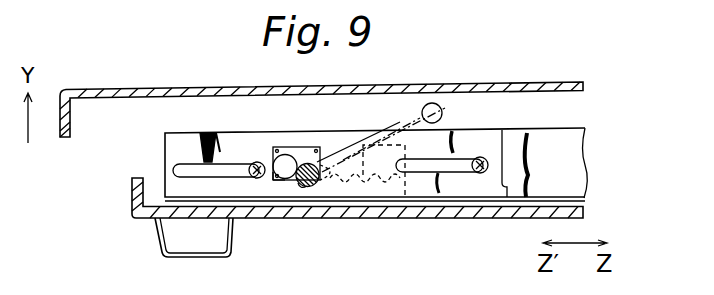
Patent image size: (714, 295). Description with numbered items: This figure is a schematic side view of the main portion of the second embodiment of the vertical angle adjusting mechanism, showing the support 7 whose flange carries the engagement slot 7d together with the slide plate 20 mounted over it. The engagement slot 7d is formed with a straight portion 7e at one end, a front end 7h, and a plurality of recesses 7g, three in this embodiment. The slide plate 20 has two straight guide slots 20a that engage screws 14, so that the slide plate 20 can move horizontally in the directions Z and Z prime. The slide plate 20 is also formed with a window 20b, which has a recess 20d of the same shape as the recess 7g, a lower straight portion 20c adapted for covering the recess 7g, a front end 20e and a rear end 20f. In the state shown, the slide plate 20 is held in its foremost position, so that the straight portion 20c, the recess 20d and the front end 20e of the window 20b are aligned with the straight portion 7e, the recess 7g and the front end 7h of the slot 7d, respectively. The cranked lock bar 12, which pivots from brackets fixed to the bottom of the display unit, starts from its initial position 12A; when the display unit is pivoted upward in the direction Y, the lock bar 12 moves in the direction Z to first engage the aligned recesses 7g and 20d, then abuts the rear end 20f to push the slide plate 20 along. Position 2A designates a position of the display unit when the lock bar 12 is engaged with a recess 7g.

The position of the display unit 2A is at (118, 89).
The support 7 is at (585, 168).
The front end of the slot 7h is at (194, 91).
The straight portion 7e is at (282, 180).
The recess 7g is at (303, 184).
The engagement slot 7d is at (411, 200).
The lock bar 12 is at (317, 182).
The initial position of the lock bar 12A is at (292, 146).
The screw 14 is at (252, 162).
The slide plate 20 is at (509, 187).
The straight guide slot 20a is at (182, 167).
The window 20b is at (305, 146).
The lower straight portion 20c is at (260, 231).
The recess 20d is at (328, 236).
The front end of the window 20e is at (273, 153).
The rear end of the window 20f is at (320, 157).